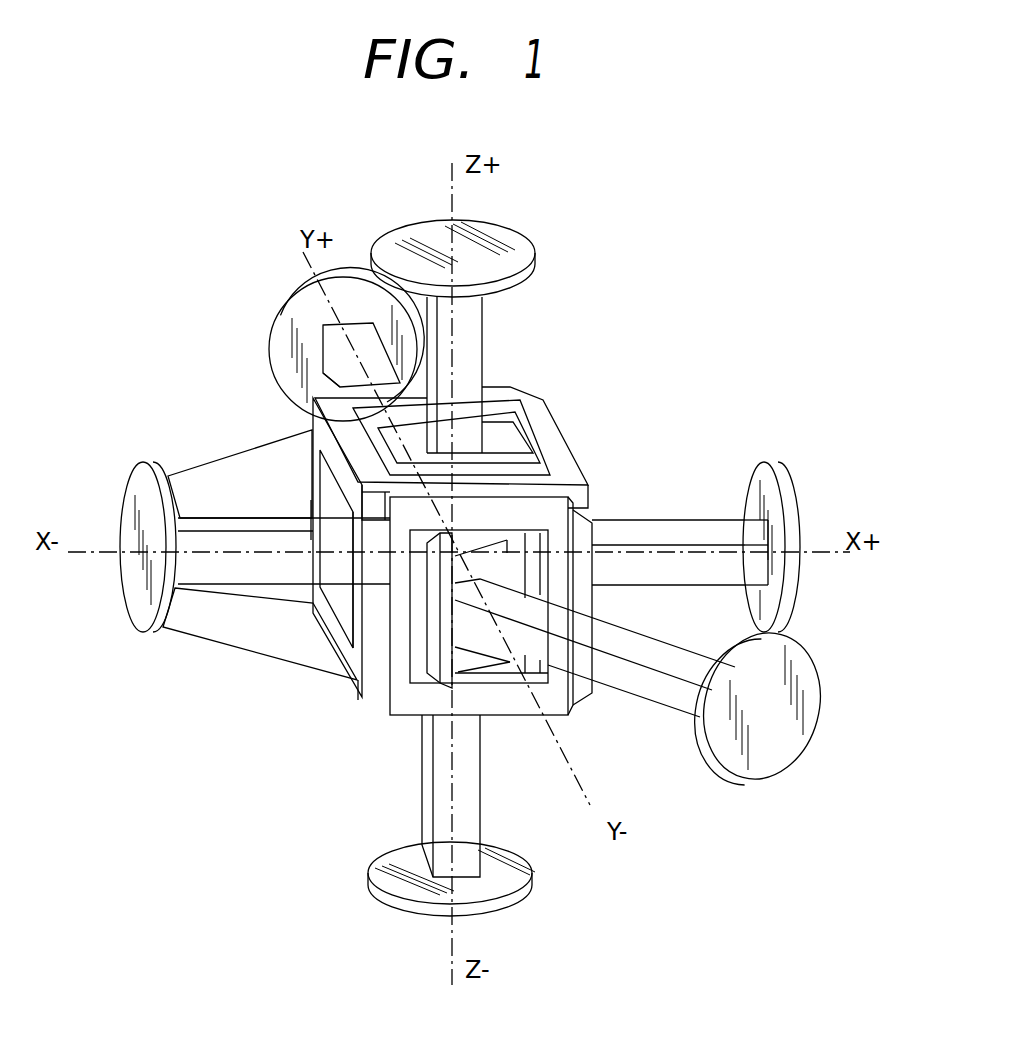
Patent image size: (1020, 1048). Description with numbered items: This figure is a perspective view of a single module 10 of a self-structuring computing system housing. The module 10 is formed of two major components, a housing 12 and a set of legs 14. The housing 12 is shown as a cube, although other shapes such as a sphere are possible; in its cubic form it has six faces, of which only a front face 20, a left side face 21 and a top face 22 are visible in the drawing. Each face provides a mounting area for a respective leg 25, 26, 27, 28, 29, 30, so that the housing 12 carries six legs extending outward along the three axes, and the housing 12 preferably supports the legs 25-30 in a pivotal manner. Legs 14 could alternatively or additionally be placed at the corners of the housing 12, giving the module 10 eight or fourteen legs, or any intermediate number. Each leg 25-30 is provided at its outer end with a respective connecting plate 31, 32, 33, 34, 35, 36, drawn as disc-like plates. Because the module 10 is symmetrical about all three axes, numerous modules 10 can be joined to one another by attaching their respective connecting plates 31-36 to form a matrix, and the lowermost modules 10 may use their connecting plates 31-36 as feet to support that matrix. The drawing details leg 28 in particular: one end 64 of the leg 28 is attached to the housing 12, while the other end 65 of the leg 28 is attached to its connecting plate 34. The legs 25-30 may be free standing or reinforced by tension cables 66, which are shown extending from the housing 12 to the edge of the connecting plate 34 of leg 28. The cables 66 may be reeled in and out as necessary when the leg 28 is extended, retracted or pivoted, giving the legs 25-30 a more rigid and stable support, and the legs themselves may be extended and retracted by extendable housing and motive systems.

The module 10 is at (748, 342).
The housing 12 is at (565, 430).
The set of legs 14 is at (671, 505).
The front face 20 is at (405, 705).
The left side face 21 is at (312, 472).
The top face 22 is at (530, 410).
The leg 25 is at (692, 652).
The leg 26 is at (722, 520).
The leg 27 is at (312, 290).
The leg 28 is at (190, 523).
The leg 29 is at (370, 871).
The leg 30 is at (487, 322).
The connecting plate 31 is at (772, 764).
The connecting plate 32 is at (808, 512).
The connecting plate 33 is at (262, 340).
The connecting plate 34 is at (138, 606).
The connecting plate 35 is at (503, 909).
The connecting plate 36 is at (548, 246).
The one end of leg 64 is at (311, 513).
The other end of leg 65 is at (192, 517).
The tension cables 66 is at (252, 652).